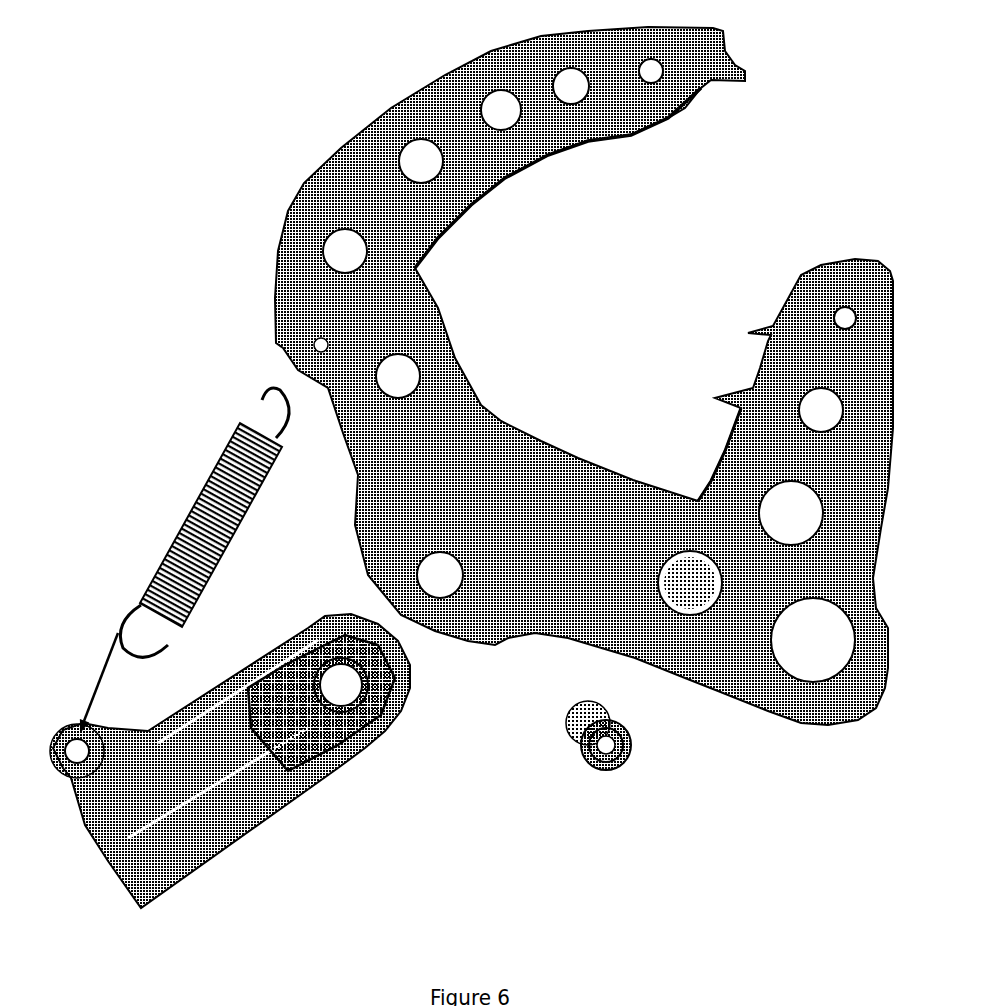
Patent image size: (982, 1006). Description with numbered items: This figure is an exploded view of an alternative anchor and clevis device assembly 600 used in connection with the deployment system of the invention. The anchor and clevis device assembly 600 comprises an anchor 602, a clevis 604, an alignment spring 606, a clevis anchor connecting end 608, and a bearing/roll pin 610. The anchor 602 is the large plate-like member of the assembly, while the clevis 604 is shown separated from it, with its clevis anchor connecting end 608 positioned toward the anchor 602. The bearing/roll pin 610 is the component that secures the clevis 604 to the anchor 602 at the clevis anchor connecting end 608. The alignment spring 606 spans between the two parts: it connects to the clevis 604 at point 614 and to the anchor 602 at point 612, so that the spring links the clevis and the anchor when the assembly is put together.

The anchor and clevis device assembly 600 is at (237, 105).
The anchor 602 is at (532, 376).
The clevis 604 is at (277, 792).
The alignment spring 606 is at (180, 503).
The clevis anchor connecting end 608 is at (398, 687).
The bearing/roll pin 610 is at (623, 748).
The point 612 is at (313, 335).
The point 614 is at (63, 728).